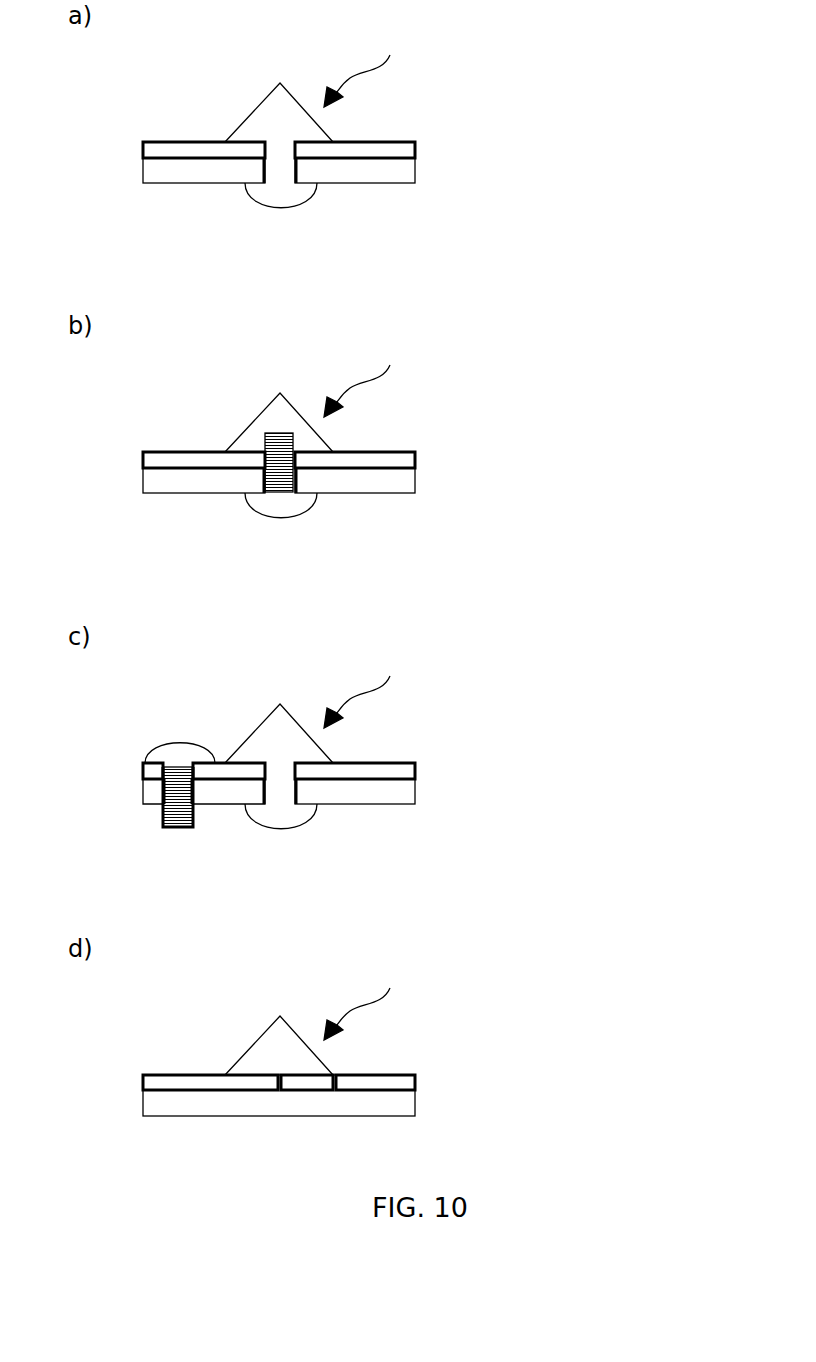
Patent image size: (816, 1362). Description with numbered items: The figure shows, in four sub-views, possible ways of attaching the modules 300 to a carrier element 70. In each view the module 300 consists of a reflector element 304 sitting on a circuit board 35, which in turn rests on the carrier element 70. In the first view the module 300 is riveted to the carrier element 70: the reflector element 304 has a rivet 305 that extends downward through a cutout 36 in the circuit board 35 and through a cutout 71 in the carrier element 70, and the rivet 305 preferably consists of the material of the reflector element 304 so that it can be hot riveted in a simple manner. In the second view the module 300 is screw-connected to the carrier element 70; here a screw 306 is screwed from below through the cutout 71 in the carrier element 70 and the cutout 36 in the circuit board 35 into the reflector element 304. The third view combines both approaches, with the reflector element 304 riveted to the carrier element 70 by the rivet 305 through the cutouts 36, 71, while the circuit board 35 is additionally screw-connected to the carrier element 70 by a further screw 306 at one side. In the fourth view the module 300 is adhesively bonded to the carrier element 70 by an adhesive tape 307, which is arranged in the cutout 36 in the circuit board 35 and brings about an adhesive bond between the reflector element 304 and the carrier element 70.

The circuit board 35 is at (152, 152).
The cutout in the circuit board 36 is at (324, 148).
The carrier element 70 is at (152, 170).
The cutout in the carrier element 71 is at (300, 170).
The module 300 is at (375, 534).
The reflector element 304 is at (263, 117).
The rivet 305 is at (275, 172).
The screw 306 is at (275, 482).
The adhesive tape 307 is at (307, 1082).